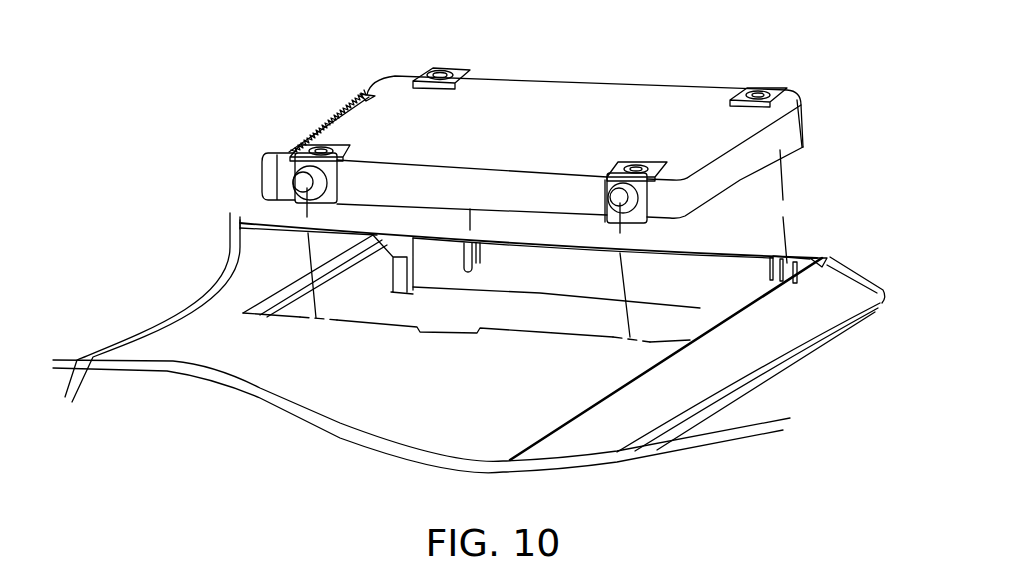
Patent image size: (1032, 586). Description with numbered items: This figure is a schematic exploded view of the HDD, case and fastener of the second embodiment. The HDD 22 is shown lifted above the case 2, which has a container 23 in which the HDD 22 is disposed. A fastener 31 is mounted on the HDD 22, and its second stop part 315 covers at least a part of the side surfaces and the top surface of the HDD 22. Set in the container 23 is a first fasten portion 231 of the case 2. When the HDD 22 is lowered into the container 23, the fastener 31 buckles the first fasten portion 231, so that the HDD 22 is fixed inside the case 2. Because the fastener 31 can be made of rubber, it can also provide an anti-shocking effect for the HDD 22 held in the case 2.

The case 2 is at (478, 397).
The HDD 22 is at (474, 121).
The container 23 is at (693, 310).
The first fasten portion 231 is at (793, 262).
The fastener 31 is at (300, 185).
The second stop part 315 is at (283, 150).